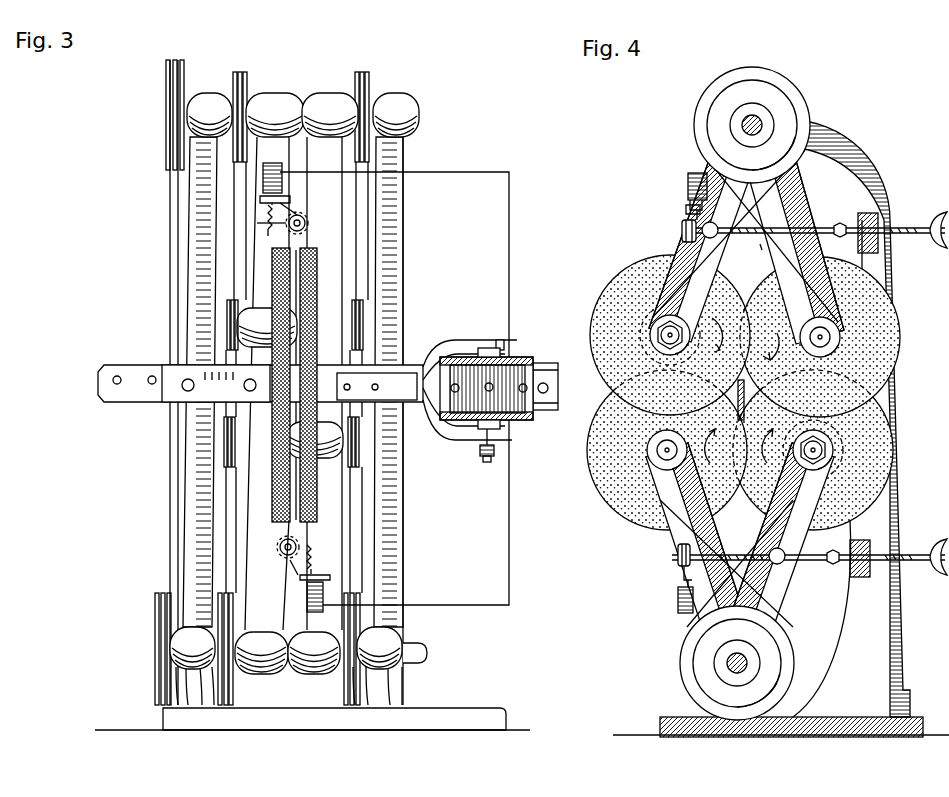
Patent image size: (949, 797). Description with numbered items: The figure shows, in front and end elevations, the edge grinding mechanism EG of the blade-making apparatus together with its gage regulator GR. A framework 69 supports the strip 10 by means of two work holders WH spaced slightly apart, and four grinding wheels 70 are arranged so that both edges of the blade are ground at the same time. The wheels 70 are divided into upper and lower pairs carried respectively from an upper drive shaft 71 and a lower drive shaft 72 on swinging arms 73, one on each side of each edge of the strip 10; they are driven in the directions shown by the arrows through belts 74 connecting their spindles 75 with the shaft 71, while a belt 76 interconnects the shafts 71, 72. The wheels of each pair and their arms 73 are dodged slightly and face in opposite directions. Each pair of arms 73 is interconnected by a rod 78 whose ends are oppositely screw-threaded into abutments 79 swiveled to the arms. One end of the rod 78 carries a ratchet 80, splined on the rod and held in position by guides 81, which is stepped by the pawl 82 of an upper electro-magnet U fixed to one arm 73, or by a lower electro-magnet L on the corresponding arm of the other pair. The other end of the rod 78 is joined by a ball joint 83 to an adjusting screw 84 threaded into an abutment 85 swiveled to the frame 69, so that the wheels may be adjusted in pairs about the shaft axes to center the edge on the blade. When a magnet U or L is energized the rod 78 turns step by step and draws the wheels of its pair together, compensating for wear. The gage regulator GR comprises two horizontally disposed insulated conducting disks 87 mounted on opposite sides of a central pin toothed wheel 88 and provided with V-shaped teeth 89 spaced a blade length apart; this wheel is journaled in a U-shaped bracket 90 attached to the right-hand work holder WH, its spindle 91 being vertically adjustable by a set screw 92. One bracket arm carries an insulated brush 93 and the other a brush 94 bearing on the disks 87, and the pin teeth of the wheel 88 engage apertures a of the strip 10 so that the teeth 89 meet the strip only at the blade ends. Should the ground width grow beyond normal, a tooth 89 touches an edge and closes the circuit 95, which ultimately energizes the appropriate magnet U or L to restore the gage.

In FIG. 3, the strip 10 is at (136, 362).
In FIG. 4, the strip 10 is at (738, 393).
In FIG. 3, the framework 69 is at (195, 484).
In FIG. 4, the framework 69 is at (781, 428).
In FIG. 3, the grinding wheels 70 is at (282, 308).
In FIG. 4, the grinding wheels 70 is at (880, 400).
In FIG. 3, the upper drive shaft 71 is at (420, 118).
In FIG. 4, the upper drive shaft 71 is at (775, 118).
In FIG. 3, the lower drive shaft 72 is at (415, 648).
In FIG. 4, the lower drive shaft 72 is at (725, 663).
In FIG. 3, the swinging arms 73 is at (293, 383).
In FIG. 4, the swinging arms 73 is at (780, 184).
In FIG. 3, the belts 74 is at (238, 82).
In FIG. 4, the belts 74 is at (770, 265).
In FIG. 3, the spindles 75 is at (362, 306).
In FIG. 4, the spindles 75 is at (840, 322).
In FIG. 3, the belt 76 is at (172, 272).
In FIG. 4, the belt 76 is at (790, 632).
In FIG. 3, the rod 78 is at (306, 226).
In FIG. 4, the rod 78 is at (808, 394).
In FIG. 4, the abutments 79 is at (743, 394).
In FIG. 3, the ratchet 80 is at (302, 218).
In FIG. 4, the ratchet 80 is at (682, 229).
In FIG. 4, the guides 81 is at (686, 210).
In FIG. 3, the pawl 82 is at (278, 220).
In FIG. 4, the pawl 82 is at (690, 203).
In FIG. 4, the ball joint 83 is at (828, 393).
In FIG. 4, the adjusting screw 84 is at (893, 230).
In FIG. 4, the abutment 85 is at (880, 215).
In FIG. 3, the insulated conducting disks 87 is at (518, 358).
In FIG. 3, the pin toothed wheel 88 is at (533, 362).
In FIG. 3, the V-shaped teeth 89 is at (490, 395).
In FIG. 3, the U-shaped bracket 90 is at (462, 440).
In FIG. 3, the spindle 91 is at (503, 341).
In FIG. 3, the set screw 92 is at (495, 465).
In FIG. 3, the insulated brush 93 is at (505, 349).
In FIG. 3, the brush 94 is at (505, 430).
In FIG. 3, the circuit 95 is at (508, 517).
In FIG. 3, the apertures a is at (112, 380).
In FIG. 3, the upper electro-magnet U is at (283, 183).
In FIG. 4, the upper electro-magnet U is at (688, 180).
In FIG. 3, the lower electro-magnet L is at (306, 596).
In FIG. 4, the lower electro-magnet L is at (677, 598).
In FIG. 3, the gage regulator GR is at (459, 320).
In FIG. 3, the work holders WH is at (398, 450).
In FIG. 3, the edge grinding mechanism EG is at (268, 46).